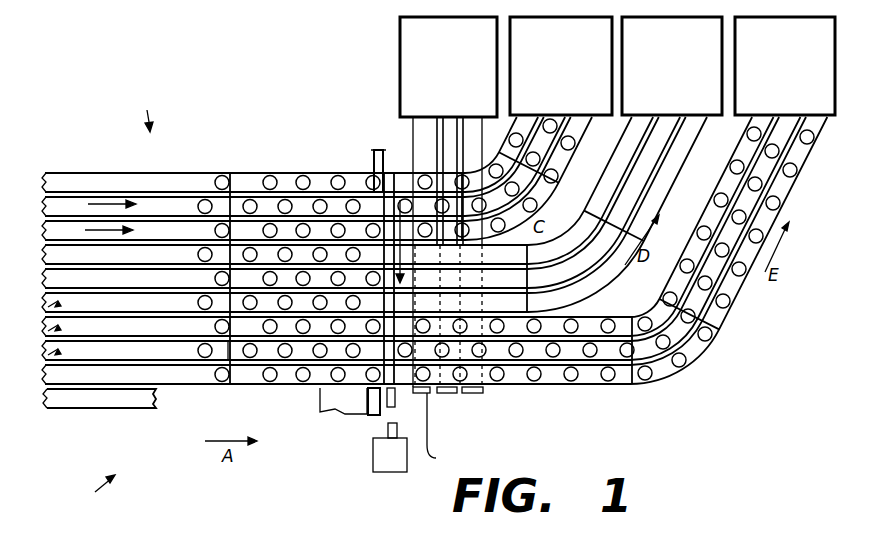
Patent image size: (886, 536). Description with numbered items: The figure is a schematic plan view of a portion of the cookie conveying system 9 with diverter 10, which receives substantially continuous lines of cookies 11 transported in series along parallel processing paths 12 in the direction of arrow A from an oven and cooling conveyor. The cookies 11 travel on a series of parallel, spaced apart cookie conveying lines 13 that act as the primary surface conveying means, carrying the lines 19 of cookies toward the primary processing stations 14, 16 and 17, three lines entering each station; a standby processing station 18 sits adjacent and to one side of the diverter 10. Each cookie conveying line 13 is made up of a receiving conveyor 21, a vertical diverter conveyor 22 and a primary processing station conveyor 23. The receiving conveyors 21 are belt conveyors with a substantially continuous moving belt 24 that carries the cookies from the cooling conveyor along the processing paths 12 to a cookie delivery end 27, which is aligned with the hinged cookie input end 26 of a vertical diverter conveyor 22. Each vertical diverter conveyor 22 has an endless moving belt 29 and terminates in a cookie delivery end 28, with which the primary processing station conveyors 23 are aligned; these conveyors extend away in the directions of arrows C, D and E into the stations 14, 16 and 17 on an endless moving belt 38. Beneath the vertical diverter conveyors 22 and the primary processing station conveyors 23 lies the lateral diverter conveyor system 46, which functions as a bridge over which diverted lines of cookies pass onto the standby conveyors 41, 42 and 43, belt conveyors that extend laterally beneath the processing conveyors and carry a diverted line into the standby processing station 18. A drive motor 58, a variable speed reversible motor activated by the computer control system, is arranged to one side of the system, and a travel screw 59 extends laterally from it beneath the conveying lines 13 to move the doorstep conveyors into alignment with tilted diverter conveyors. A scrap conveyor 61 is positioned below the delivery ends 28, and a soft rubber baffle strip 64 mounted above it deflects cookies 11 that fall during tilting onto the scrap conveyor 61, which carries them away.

The cookie conveying system 9 is at (144, 111).
The diverter 10 is at (91, 491).
The cookies 11 is at (207, 184).
The processing paths 12 is at (85, 232).
The cookie conveying lines 13 is at (45, 186).
The primary processing station 14 is at (570, 76).
The primary processing station 16 is at (681, 76).
The primary processing station 17 is at (794, 76).
The standby processing station 18 is at (452, 80).
The lines of cookies 19 is at (275, 206).
The receiving conveyors 21 is at (47, 302).
The vertical diverter conveyors 22 is at (273, 378).
The primary processing station conveyors 23 is at (648, 193).
The moving belt 24 is at (45, 400).
The hinged cookie input end 26 is at (240, 352).
The cookie delivery end 27 is at (223, 378).
The cookie delivery end 28 is at (374, 158).
The moving belt 29 is at (182, 178).
The moving belt 38 is at (594, 334).
The standby conveyor 41 is at (413, 124).
The standby conveyor 42 is at (455, 426).
The standby conveyor 43 is at (480, 431).
The lateral diverter conveyor system 46 is at (376, 149).
The drive motor 58 is at (390, 473).
The travel screw 59 is at (388, 432).
The scrap conveyor 61 is at (322, 404).
The baffle strip 64 is at (370, 407).